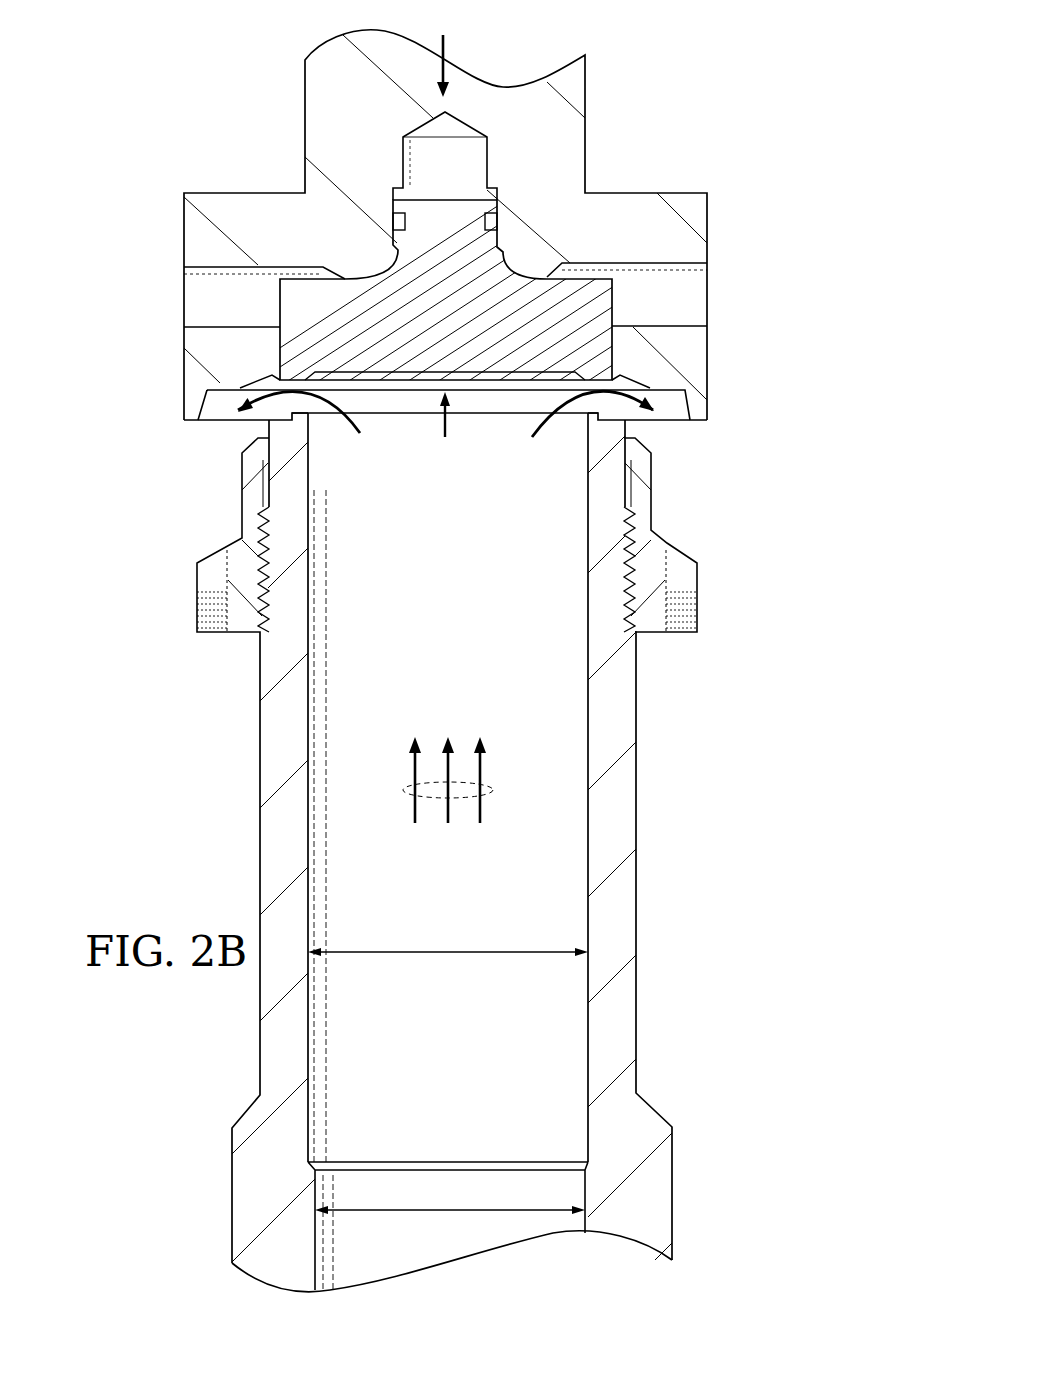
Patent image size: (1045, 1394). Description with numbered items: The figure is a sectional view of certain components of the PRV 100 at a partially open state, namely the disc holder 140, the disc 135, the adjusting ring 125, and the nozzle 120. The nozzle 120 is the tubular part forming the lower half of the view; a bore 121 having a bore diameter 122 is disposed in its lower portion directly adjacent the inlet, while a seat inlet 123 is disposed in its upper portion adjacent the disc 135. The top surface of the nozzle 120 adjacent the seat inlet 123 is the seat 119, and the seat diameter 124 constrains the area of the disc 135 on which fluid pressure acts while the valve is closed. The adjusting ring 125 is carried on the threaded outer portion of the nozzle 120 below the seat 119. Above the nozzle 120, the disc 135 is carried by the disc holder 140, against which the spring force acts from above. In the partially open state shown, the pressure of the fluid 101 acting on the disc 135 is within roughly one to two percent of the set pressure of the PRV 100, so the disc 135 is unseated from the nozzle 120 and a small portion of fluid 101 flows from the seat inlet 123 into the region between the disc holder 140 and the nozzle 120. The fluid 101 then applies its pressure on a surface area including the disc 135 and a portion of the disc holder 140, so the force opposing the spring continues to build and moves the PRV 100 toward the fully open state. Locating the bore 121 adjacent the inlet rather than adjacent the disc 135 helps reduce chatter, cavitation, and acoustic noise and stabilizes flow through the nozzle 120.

The PRV 100 is at (705, 76).
The fluid 101 is at (370, 443).
The seat 119 is at (323, 427).
The nozzle 120 is at (637, 907).
The bore 121 is at (508, 1187).
The bore diameter 122 is at (385, 1213).
The seat inlet 123 is at (469, 641).
The seat diameter 124 is at (448, 954).
The adjusting ring 125 is at (212, 637).
The disc 135 is at (466, 325).
The disc holder 140 is at (304, 90).